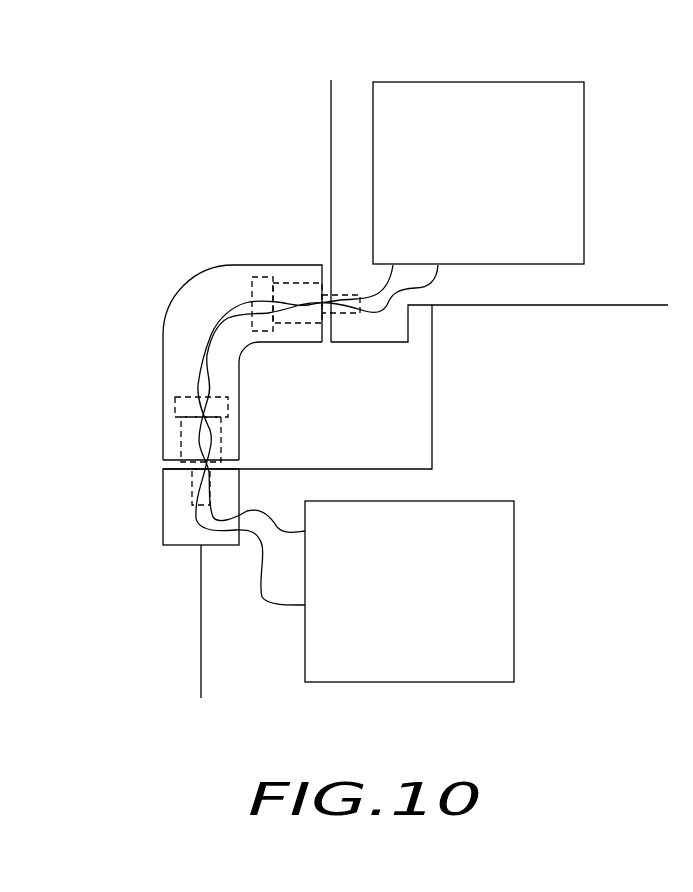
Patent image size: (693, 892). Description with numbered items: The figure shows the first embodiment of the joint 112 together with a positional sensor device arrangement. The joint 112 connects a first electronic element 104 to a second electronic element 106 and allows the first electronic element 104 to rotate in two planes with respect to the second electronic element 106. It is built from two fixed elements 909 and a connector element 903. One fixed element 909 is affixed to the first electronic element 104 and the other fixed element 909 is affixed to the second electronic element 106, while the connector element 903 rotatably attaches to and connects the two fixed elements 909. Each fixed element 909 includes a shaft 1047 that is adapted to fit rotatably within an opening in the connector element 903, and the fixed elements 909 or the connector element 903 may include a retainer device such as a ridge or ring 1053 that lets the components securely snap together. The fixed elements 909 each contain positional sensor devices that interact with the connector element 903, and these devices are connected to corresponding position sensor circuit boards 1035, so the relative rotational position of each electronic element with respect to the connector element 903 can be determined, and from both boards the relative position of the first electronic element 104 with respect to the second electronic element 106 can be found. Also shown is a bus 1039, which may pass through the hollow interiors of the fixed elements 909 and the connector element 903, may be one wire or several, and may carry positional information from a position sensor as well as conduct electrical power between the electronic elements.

The first electronic element 104 is at (331, 110).
The second electronic element 106 is at (201, 673).
The joint 112 is at (161, 280).
The connector element 903 is at (200, 272).
The fixed element 909 is at (162, 507).
The position sensor circuit board 1035 is at (585, 172).
The bus 1039 is at (195, 357).
The shaft 1047 is at (297, 326).
The ridge or ring 1053 is at (267, 280).